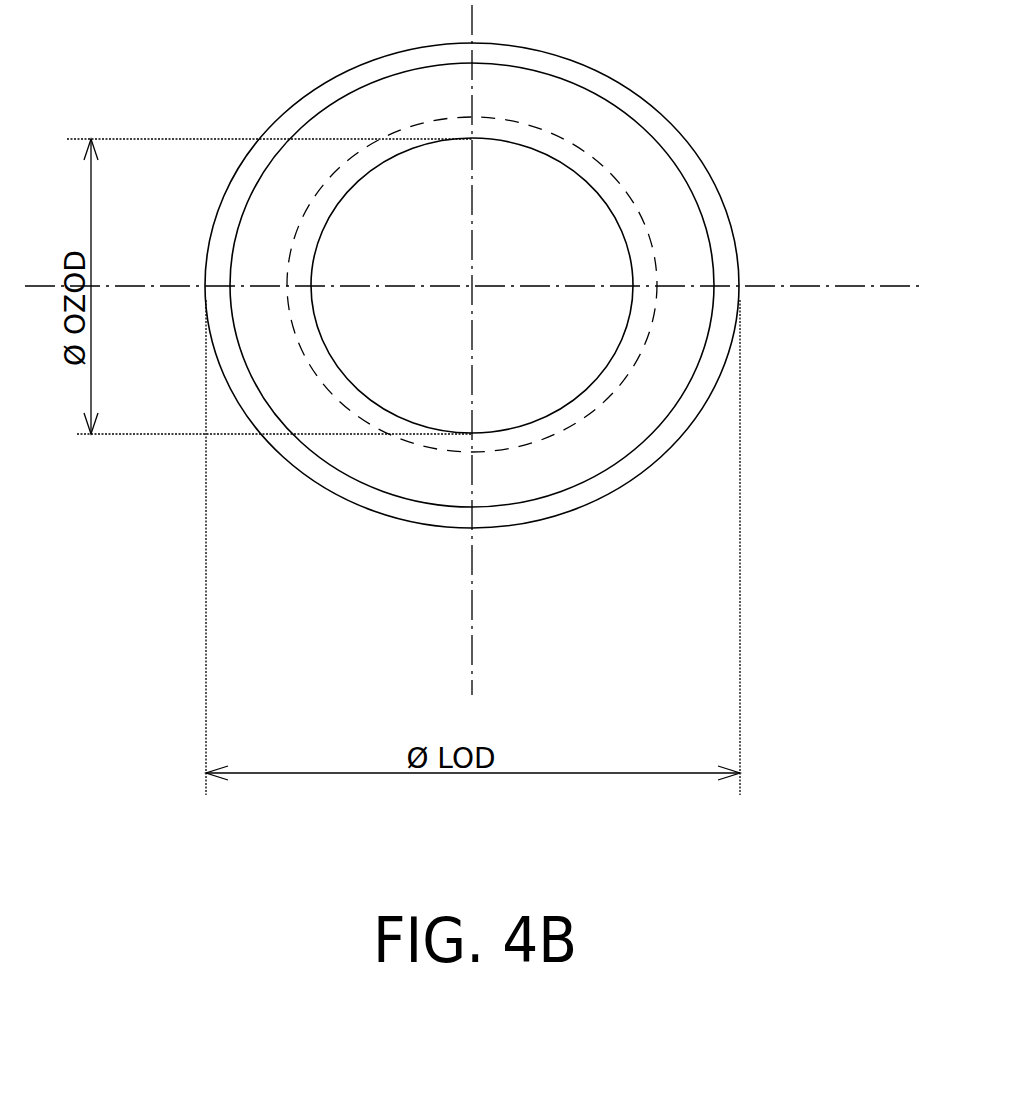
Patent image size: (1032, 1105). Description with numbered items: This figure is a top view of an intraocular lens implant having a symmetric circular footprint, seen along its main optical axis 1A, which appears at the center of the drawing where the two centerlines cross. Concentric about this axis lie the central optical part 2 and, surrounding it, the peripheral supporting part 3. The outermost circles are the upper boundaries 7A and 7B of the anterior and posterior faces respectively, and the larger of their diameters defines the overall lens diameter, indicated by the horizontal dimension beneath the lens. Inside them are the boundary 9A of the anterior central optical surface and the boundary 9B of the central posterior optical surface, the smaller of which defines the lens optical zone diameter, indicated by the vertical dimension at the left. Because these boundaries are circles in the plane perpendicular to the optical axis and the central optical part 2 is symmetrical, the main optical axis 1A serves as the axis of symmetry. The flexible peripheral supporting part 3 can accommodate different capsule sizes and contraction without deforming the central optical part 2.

The main optical axis 1A is at (473, 286).
The central optical part 2 is at (530, 362).
The peripheral supporting part 3 is at (645, 405).
The upper boundary of the anterior face 7A is at (595, 477).
The upper boundary of the posterior face 7B is at (532, 525).
The boundary of the anterior central optical surface 9A is at (580, 173).
The boundary of the central posterior optical surface 9B is at (648, 230).